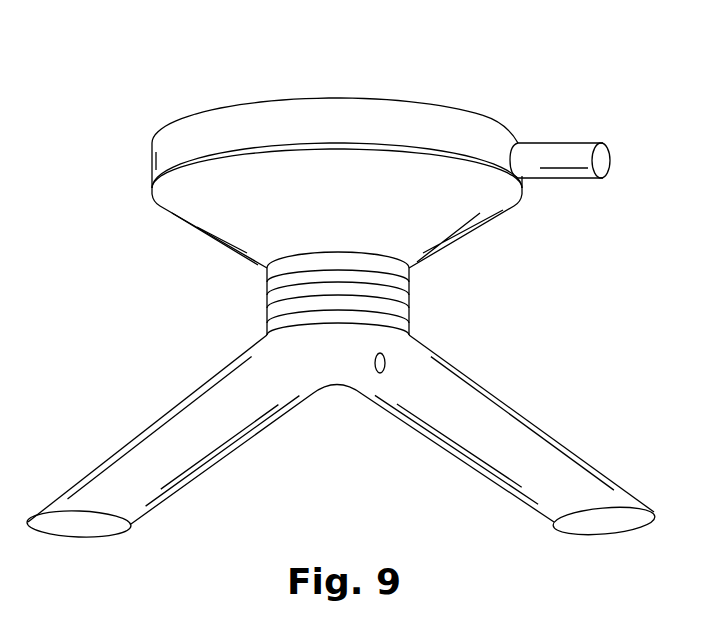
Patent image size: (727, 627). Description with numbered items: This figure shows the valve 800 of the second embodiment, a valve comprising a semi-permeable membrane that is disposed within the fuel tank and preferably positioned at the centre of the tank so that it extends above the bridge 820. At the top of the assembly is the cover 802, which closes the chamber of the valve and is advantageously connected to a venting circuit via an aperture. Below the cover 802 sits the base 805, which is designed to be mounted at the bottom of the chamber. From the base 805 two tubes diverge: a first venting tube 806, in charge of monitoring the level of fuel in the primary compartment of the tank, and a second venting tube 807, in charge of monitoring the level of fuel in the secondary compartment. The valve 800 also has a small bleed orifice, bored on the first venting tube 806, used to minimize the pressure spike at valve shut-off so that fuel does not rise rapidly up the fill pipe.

The valve 800 is at (369, 79).
The cover 802 is at (209, 133).
The base 805 is at (300, 298).
The first venting tube 806 is at (547, 465).
The second venting tube 807 is at (185, 437).
The bridge 820 is at (483, 116).